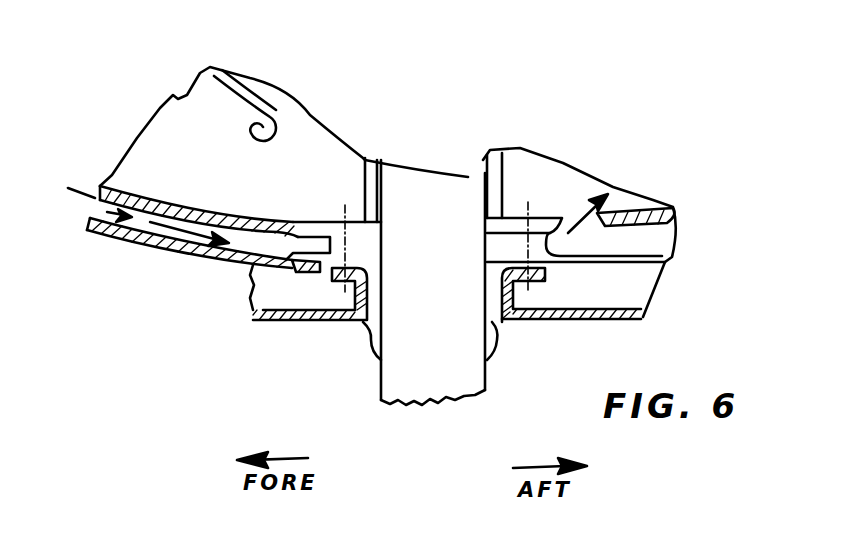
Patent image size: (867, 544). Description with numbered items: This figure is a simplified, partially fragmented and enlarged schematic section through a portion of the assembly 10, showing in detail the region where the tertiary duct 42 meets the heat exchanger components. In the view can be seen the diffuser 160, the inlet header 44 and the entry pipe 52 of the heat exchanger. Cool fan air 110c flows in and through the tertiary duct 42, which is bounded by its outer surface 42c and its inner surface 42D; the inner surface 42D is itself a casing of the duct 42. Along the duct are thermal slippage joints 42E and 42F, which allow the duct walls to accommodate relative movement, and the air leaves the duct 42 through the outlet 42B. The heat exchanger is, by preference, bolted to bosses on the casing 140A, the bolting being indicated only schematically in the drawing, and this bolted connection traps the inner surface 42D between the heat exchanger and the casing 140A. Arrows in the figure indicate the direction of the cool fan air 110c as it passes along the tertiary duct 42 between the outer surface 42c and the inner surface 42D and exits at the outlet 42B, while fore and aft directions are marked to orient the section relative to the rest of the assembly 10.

The aircraft nacelle assembly 10 is at (403, 132).
The diffuser 160 is at (285, 140).
The inlet header 44 is at (468, 176).
The entry pipe 52 is at (430, 392).
The tertiary duct 42 is at (204, 237).
The outer surface 42c is at (150, 200).
The inner surface 42D is at (140, 240).
The thermal slippage joint 42E is at (307, 227).
The thermal slippage joint 42F is at (295, 273).
The outlet 42B is at (643, 211).
The cool fan air 110c is at (82, 188).
The casing 140A is at (308, 321).